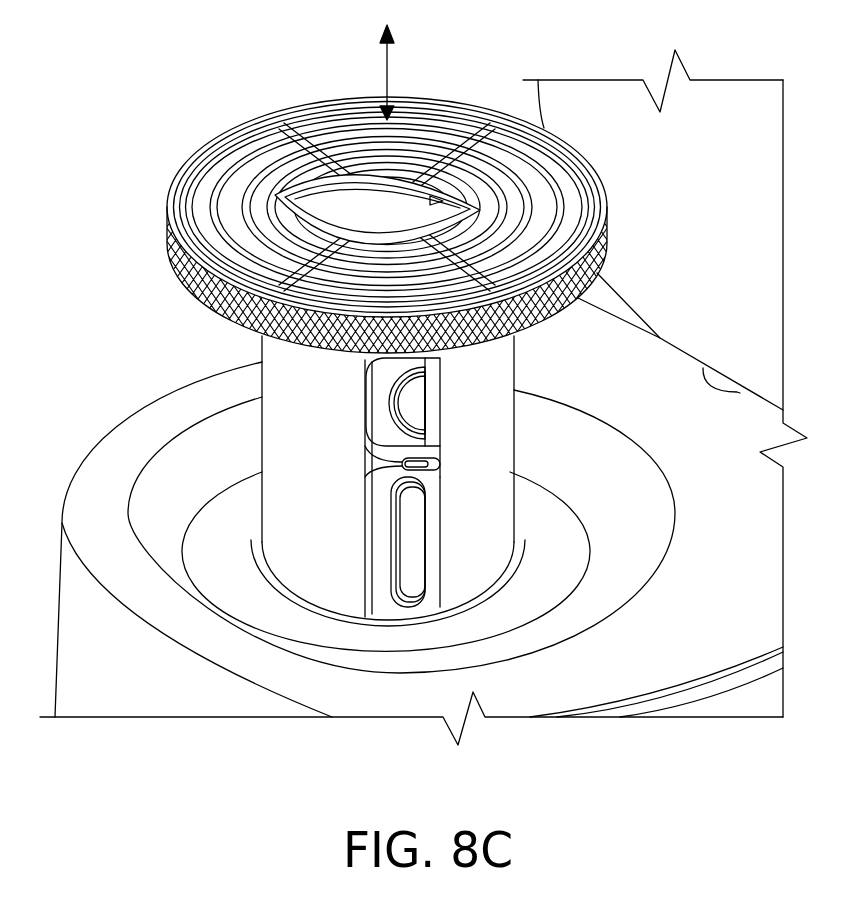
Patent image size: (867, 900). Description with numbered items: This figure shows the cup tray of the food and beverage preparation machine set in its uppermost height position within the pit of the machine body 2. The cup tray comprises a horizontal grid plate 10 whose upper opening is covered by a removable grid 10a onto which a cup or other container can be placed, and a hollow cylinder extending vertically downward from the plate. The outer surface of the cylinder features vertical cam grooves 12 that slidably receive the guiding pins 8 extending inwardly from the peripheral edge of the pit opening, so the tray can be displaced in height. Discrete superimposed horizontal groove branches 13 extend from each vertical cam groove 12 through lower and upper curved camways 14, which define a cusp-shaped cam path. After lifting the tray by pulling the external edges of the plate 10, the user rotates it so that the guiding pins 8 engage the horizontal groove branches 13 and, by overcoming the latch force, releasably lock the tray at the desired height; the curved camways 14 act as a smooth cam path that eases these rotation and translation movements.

The machine body 2 is at (746, 537).
The guiding pin 8 is at (428, 613).
The horizontal grid plate 10 is at (183, 283).
The removable grid 10a is at (215, 187).
The vertical cam groove 12 is at (378, 412).
The horizontal groove branch 13 is at (440, 462).
The curved camway 14 is at (392, 462).